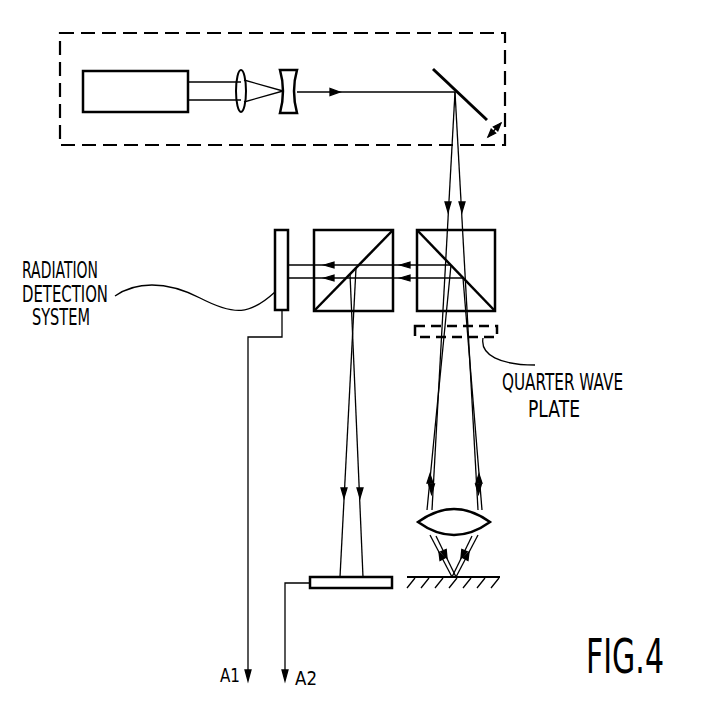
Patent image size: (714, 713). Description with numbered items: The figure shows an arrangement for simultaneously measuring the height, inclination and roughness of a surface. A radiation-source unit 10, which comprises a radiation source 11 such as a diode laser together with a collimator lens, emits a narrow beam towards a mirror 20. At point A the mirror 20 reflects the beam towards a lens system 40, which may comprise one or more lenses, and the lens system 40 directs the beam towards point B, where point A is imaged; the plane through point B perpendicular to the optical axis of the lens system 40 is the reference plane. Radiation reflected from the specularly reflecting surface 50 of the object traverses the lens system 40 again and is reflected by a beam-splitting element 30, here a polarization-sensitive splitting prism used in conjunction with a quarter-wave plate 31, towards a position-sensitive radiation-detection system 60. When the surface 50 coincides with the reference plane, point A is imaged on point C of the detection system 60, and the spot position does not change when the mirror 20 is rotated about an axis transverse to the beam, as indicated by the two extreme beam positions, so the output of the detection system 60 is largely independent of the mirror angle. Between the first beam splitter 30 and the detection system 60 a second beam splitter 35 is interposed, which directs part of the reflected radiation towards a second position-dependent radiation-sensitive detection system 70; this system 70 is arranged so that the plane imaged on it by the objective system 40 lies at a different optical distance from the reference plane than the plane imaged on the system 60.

The radiation-source unit 10 is at (115, 32).
The radiation source 11 is at (118, 71).
The mirror 20 is at (446, 52).
The beam-splitting element 30 is at (497, 267).
The quarter-wave plate 31 is at (502, 333).
The second beam splitter 35 is at (340, 230).
The lens system 40 is at (490, 522).
The surface 50 is at (488, 577).
The position-sensitive radiation-detection system 60 is at (275, 272).
The second position-dependent radiation-sensitive detection system 70 is at (323, 577).